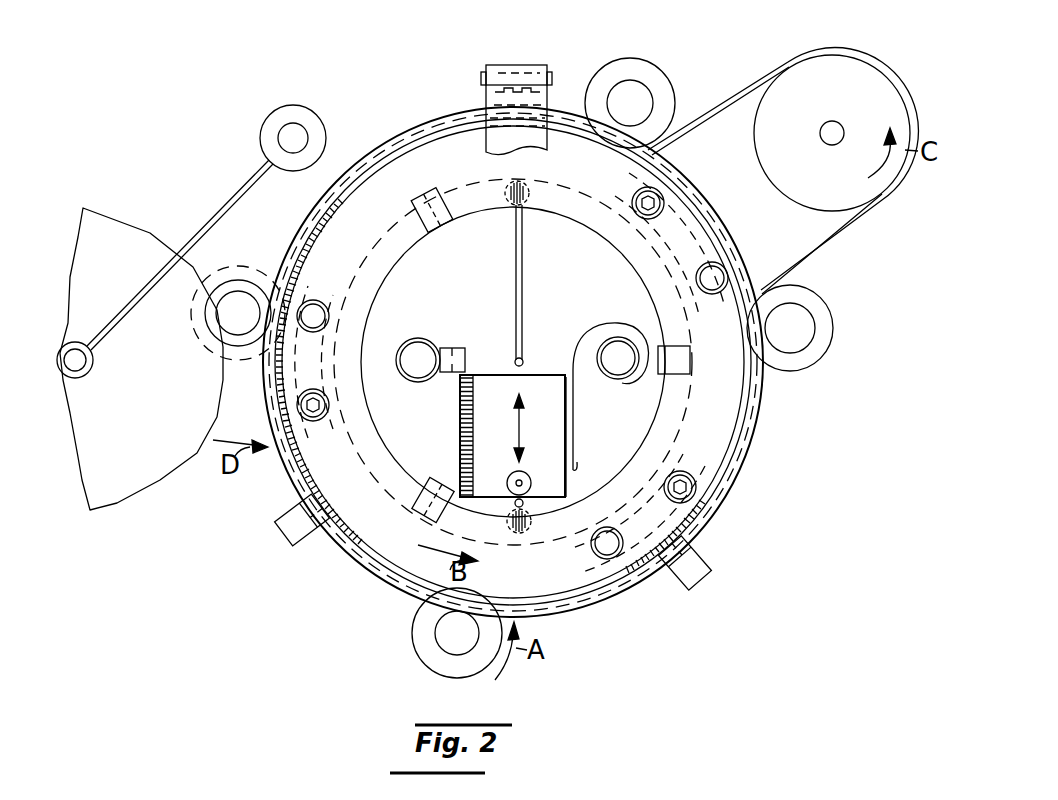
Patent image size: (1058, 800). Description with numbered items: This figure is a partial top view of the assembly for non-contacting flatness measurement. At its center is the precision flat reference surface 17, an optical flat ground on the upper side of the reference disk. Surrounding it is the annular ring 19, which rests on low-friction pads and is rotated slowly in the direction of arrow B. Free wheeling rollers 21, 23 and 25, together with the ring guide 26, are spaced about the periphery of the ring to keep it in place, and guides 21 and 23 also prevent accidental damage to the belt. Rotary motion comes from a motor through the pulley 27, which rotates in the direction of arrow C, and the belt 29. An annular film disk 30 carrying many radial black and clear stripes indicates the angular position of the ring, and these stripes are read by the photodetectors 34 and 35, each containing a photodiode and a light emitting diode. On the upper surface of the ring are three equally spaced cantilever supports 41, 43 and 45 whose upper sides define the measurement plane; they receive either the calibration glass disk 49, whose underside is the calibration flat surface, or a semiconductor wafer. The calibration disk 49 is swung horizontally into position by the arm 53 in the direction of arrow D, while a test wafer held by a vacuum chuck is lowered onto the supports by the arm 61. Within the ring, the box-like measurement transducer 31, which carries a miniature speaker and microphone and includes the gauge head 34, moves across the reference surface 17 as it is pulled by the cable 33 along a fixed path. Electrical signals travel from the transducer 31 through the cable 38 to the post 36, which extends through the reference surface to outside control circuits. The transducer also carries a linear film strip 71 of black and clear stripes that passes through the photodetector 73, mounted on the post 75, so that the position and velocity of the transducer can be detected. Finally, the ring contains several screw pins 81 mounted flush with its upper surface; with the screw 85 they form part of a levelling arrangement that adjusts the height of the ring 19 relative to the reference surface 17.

The reference surface 17 is at (481, 299).
The annular ring 19 is at (725, 425).
The free wheeling roller 21 is at (422, 645).
The free wheeling roller 23 is at (236, 281).
The free wheeling roller 25 is at (834, 329).
The ring guide 26 is at (665, 94).
The pulley 27 is at (893, 108).
The belt 29 is at (830, 242).
The film disk 30 is at (735, 470).
The measurement transducer 31 is at (538, 378).
The cable 33 is at (524, 268).
The photodetector / gauge head 34 is at (294, 538).
The photodetector 35 is at (702, 563).
The post 36 is at (620, 372).
The cable 38 is at (575, 412).
The cantilever support 41 is at (697, 355).
The cantilever support 43 is at (424, 204).
The cantilever support 45 is at (428, 510).
The calibration glass disk 49 is at (183, 436).
The arm 53 is at (264, 178).
The arm 61 is at (540, 98).
The linear film strip 71 is at (460, 440).
The photodetector 73 is at (462, 340).
The post 75 is at (418, 372).
The screw pin 81 is at (315, 416).
The screw 85 is at (313, 312).